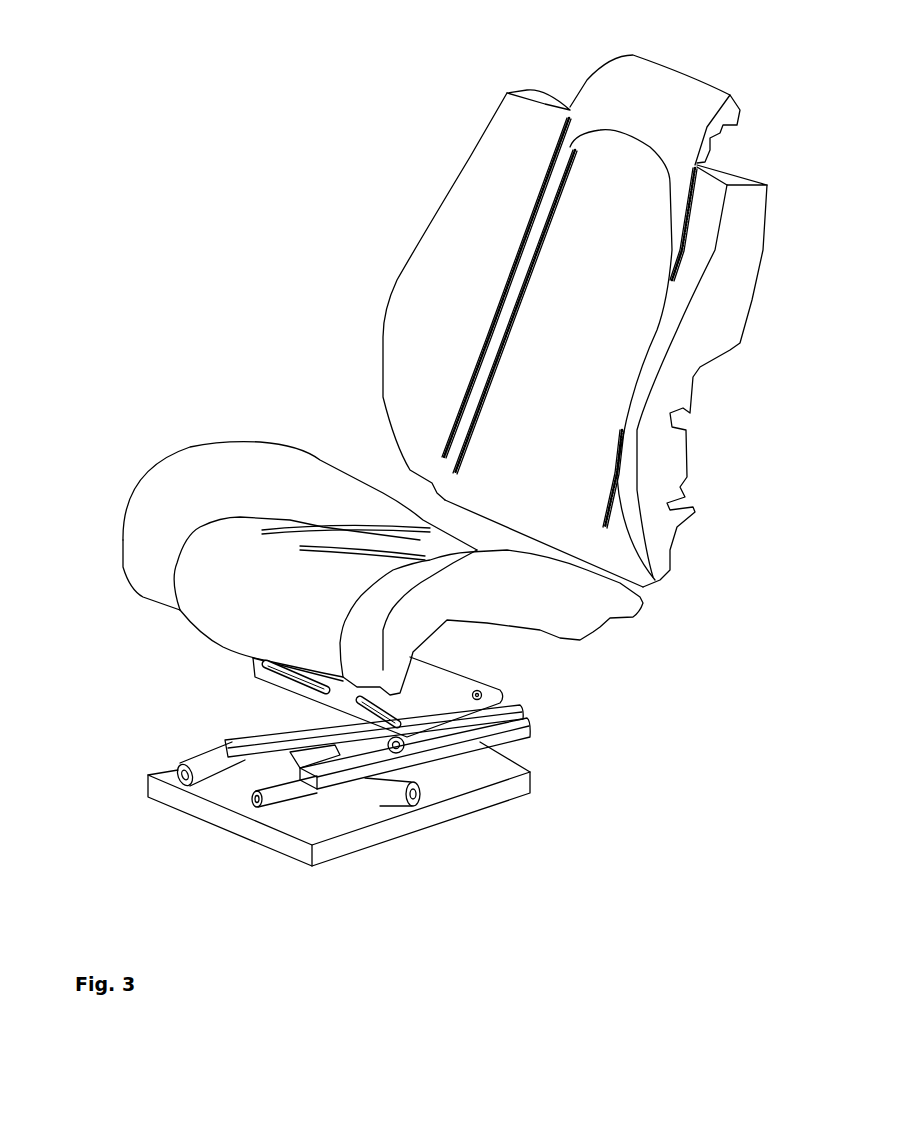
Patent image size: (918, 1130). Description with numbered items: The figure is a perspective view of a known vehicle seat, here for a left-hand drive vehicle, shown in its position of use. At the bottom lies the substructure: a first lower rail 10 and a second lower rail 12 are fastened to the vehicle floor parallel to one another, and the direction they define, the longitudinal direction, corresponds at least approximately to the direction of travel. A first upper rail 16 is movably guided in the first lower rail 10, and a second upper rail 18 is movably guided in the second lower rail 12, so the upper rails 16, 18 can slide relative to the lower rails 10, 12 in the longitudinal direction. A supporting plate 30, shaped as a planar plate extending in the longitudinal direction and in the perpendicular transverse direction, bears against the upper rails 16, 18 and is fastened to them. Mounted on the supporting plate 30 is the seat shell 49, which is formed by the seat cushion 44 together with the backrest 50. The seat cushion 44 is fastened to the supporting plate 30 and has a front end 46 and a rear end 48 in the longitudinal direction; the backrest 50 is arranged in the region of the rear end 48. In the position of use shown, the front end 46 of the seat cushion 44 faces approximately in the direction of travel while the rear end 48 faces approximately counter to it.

The first lower rail 10 is at (173, 770).
The second lower rail 12 is at (262, 807).
The first upper rail 16 is at (277, 723).
The second upper rail 18 is at (337, 773).
The supporting plate 30 is at (440, 687).
The seat cushion 44 is at (338, 527).
The front end 46 is at (225, 580).
The rear end 48 is at (645, 598).
The seat shell 49 is at (403, 440).
The backrest 50 is at (568, 277).